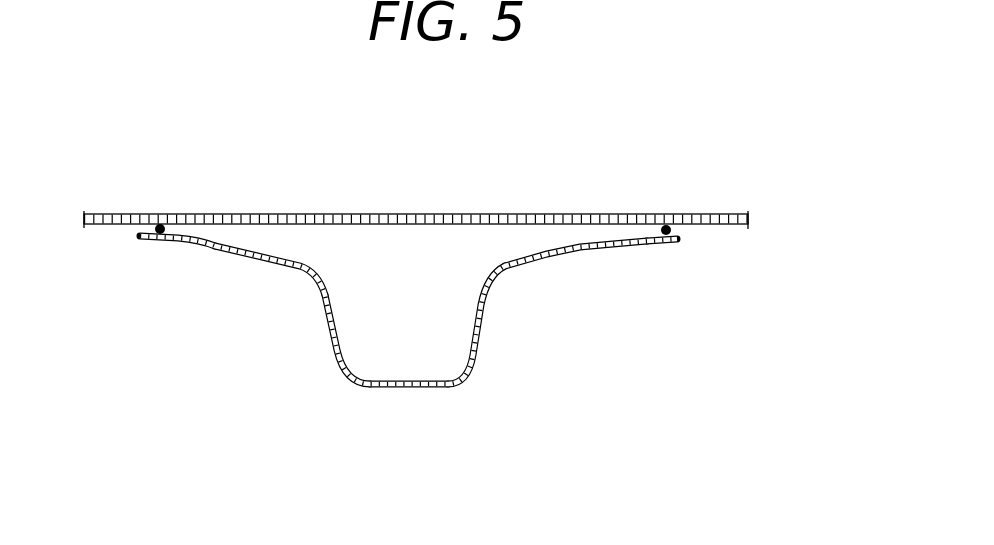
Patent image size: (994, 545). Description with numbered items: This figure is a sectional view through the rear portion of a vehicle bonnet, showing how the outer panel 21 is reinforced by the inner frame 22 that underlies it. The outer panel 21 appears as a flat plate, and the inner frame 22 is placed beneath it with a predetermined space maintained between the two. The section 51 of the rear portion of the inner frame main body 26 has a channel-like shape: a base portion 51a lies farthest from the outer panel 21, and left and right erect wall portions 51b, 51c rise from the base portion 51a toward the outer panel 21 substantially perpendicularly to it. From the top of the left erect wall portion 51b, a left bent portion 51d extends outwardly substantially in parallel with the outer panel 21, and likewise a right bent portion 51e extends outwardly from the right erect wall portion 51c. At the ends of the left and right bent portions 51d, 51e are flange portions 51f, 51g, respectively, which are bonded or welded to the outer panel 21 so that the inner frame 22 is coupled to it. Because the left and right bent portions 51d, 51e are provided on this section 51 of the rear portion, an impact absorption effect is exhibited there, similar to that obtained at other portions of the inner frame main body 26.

The outer panel 21 is at (432, 212).
The inner frame 22 is at (502, 416).
The inner frame main body 26 is at (497, 372).
The section of the rear portion 51 is at (503, 277).
The base portion 51a is at (403, 388).
The left erect wall portion 51b is at (331, 328).
The right erect wall portion 51c is at (484, 325).
The left bent portion 51d is at (241, 252).
The right bent portion 51e is at (592, 254).
The flange portion 51f is at (176, 231).
The flange portion 51g is at (650, 224).